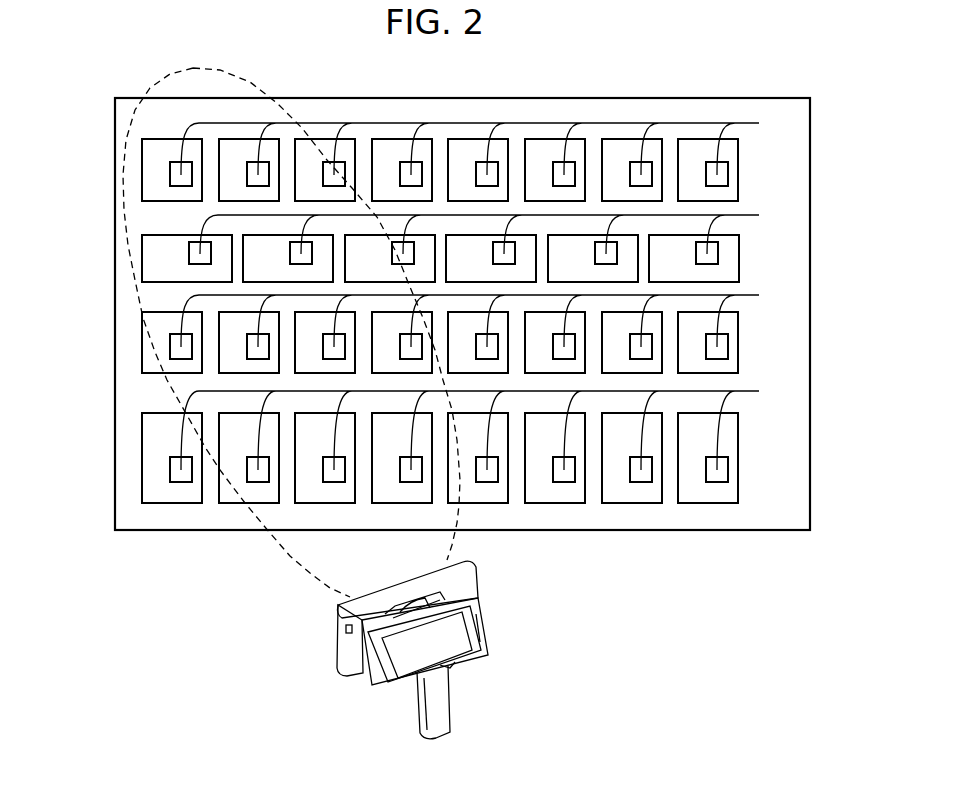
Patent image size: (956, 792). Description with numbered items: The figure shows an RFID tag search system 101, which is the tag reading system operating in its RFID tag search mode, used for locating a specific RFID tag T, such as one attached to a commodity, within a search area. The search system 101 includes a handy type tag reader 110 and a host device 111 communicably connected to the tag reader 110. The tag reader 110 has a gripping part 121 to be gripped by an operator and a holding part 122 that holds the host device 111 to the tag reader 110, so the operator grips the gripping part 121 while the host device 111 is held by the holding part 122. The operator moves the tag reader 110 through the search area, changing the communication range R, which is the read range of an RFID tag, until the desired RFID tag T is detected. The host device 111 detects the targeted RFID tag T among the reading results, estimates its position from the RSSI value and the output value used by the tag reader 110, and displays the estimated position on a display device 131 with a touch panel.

The RFID tag T is at (482, 291).
The communication range R is at (130, 281).
The RFID tag search system 101 is at (323, 661).
The tag reader 110 is at (463, 573).
The host device 111 is at (477, 600).
The display device 131 is at (488, 650).
The holding part 122 is at (450, 668).
The gripping part 121 is at (432, 713).